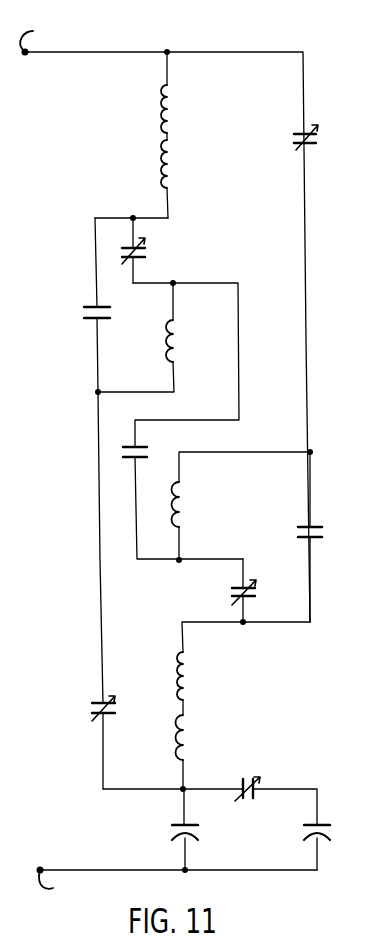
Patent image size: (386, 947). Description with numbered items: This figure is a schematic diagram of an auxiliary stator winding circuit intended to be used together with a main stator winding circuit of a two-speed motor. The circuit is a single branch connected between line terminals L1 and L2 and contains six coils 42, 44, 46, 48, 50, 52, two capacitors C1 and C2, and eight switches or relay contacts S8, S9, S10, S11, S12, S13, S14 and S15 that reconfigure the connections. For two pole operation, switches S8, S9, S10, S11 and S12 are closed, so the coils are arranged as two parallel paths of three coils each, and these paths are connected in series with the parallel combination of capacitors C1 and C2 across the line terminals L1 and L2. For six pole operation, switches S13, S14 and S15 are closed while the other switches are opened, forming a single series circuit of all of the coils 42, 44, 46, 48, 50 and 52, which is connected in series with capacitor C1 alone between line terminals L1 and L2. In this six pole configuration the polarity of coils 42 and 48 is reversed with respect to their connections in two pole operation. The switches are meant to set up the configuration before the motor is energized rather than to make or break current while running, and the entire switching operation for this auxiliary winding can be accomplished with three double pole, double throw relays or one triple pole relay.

The line terminal L1 is at (36, 41).
The line terminal L2 is at (59, 885).
The coil 42 is at (178, 335).
The coil 44 is at (170, 103).
The coil 46 is at (172, 163).
The coil 48 is at (182, 505).
The coil 50 is at (186, 672).
The coil 52 is at (186, 737).
The switch S8 is at (150, 249).
The switch S9 is at (118, 710).
The switch S10 is at (292, 137).
The switch S11 is at (232, 594).
The switch S12 is at (249, 779).
The switch S13 is at (110, 313).
The switch S14 is at (150, 453).
The switch S15 is at (295, 529).
The capacitor C1 is at (170, 829).
The capacitor C2 is at (301, 829).